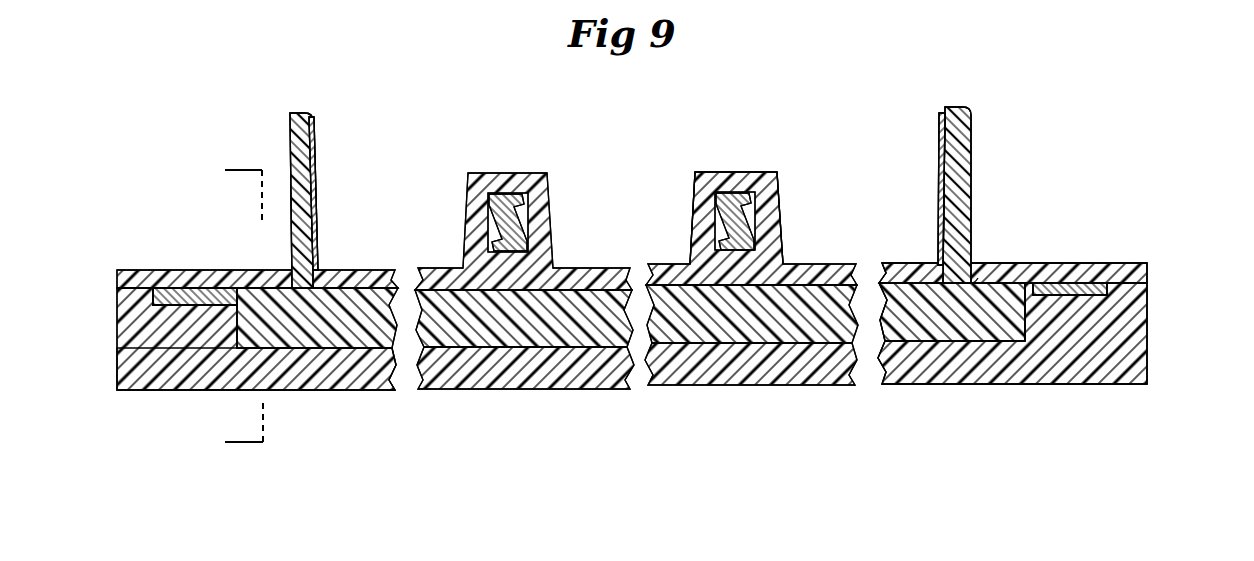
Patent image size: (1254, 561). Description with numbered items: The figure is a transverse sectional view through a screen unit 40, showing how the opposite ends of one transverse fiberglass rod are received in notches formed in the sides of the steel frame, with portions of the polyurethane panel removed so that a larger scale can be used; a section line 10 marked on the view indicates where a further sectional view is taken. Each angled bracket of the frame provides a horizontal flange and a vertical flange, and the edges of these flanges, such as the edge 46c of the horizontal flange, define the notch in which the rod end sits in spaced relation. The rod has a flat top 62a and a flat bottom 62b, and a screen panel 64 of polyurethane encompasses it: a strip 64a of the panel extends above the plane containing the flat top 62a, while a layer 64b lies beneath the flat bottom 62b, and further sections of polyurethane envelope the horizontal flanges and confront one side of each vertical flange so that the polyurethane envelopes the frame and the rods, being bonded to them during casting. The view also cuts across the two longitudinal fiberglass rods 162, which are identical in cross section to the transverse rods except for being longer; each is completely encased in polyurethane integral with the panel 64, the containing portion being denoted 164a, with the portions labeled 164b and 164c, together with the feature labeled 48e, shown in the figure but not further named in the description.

The section line 10— 10 is at (229, 307).
The screen unit 40 is at (1049, 158).
The edge of horizontal flange 46c is at (240, 287).
The pin base edge 48e is at (1030, 264).
The flat top 62a is at (824, 263).
The flat bottom 62b is at (960, 343).
The screen panel 64 is at (462, 394).
The strip of screen panel 64a is at (478, 173).
The layer of polyurethane 64b is at (723, 328).
The longitudinal fiberglass rod 162 is at (743, 215).
The portion of panel 164a is at (728, 180).
The boss base 164b is at (745, 262).
The boss side wall 164c is at (698, 218).